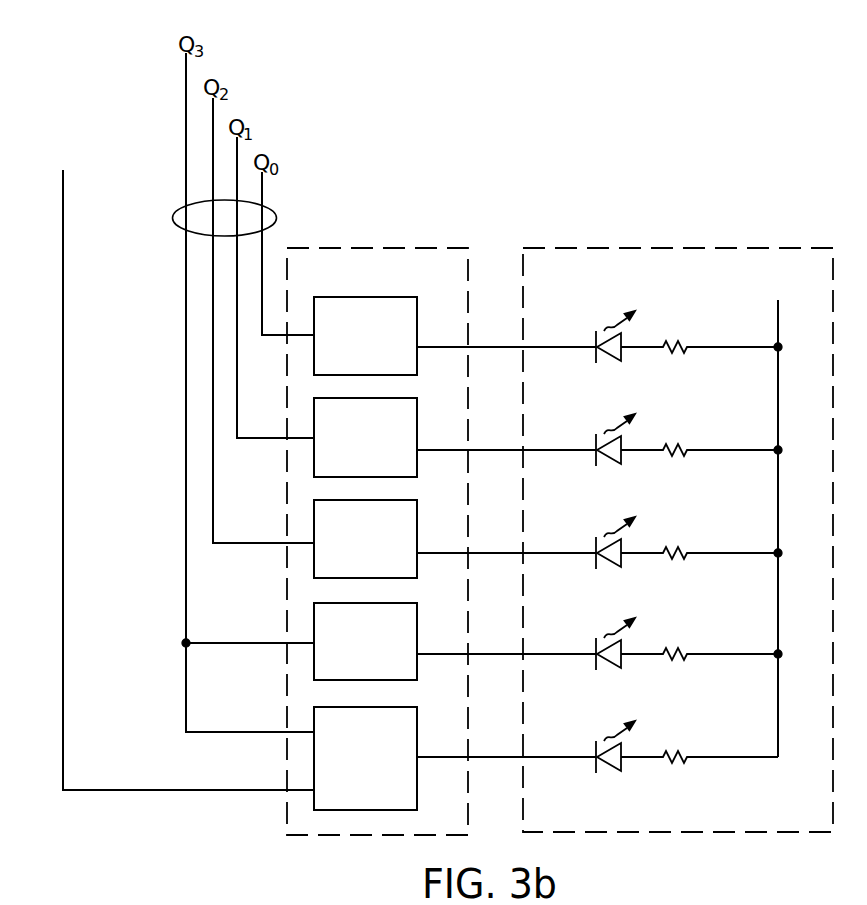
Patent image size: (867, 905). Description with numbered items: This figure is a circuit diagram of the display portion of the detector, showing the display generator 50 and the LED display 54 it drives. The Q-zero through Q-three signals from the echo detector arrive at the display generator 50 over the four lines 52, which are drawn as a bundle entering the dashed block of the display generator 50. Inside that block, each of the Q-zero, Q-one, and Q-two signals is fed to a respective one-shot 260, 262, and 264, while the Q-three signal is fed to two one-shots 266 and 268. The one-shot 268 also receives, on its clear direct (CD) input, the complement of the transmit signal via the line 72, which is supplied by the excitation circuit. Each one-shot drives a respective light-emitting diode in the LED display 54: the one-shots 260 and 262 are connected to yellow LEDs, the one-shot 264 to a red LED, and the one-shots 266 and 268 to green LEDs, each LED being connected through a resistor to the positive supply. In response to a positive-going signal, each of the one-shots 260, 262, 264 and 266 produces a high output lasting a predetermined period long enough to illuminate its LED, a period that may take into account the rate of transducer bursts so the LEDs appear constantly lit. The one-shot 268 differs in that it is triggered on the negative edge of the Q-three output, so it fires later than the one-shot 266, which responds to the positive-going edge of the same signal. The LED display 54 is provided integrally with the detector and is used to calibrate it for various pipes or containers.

The line 72 is at (62, 212).
The lines 52 is at (174, 214).
The display generator 50 is at (340, 248).
The LED display 54 is at (720, 248).
The one-shot 260 is at (433, 285).
The one-shot 262 is at (434, 388).
The one-shot 264 is at (417, 500).
The one-shot 266 is at (434, 593).
The one-shot 268 is at (434, 697).